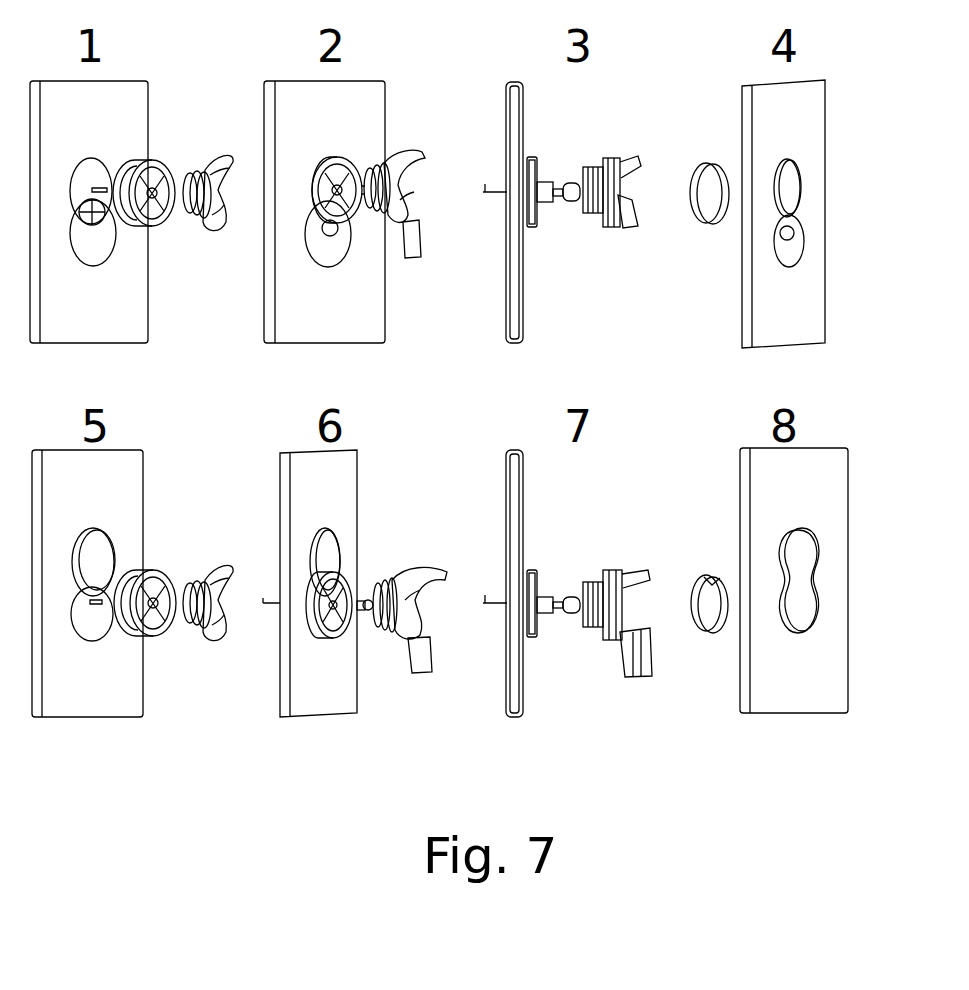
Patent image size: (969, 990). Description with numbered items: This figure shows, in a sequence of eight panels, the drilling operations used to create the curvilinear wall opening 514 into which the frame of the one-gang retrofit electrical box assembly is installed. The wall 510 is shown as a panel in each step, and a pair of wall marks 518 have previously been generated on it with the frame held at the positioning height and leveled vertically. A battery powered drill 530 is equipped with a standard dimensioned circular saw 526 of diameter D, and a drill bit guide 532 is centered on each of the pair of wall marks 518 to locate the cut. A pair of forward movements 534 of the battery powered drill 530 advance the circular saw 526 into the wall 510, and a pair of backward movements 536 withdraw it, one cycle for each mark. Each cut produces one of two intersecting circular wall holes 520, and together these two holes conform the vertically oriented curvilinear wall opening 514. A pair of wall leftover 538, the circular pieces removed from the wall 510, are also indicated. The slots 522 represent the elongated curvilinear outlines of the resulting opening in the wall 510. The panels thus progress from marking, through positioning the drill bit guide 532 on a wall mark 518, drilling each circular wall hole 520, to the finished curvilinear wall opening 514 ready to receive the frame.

The panel / mounting board 510 is at (152, 138).
The curvilinear wall opening 514 is at (779, 540).
The pair of wall marks 518 is at (90, 236).
The intersecting circular wall holes 520 is at (792, 187).
The elongated slot 522 is at (69, 172).
The circular saw 526 is at (136, 221).
The battery powered drill 530 is at (215, 203).
The drill bit guide 532 is at (104, 184).
The forward movements 534 is at (390, 148).
The backward movements 536 is at (637, 153).
The wall leftover 538 is at (705, 156).